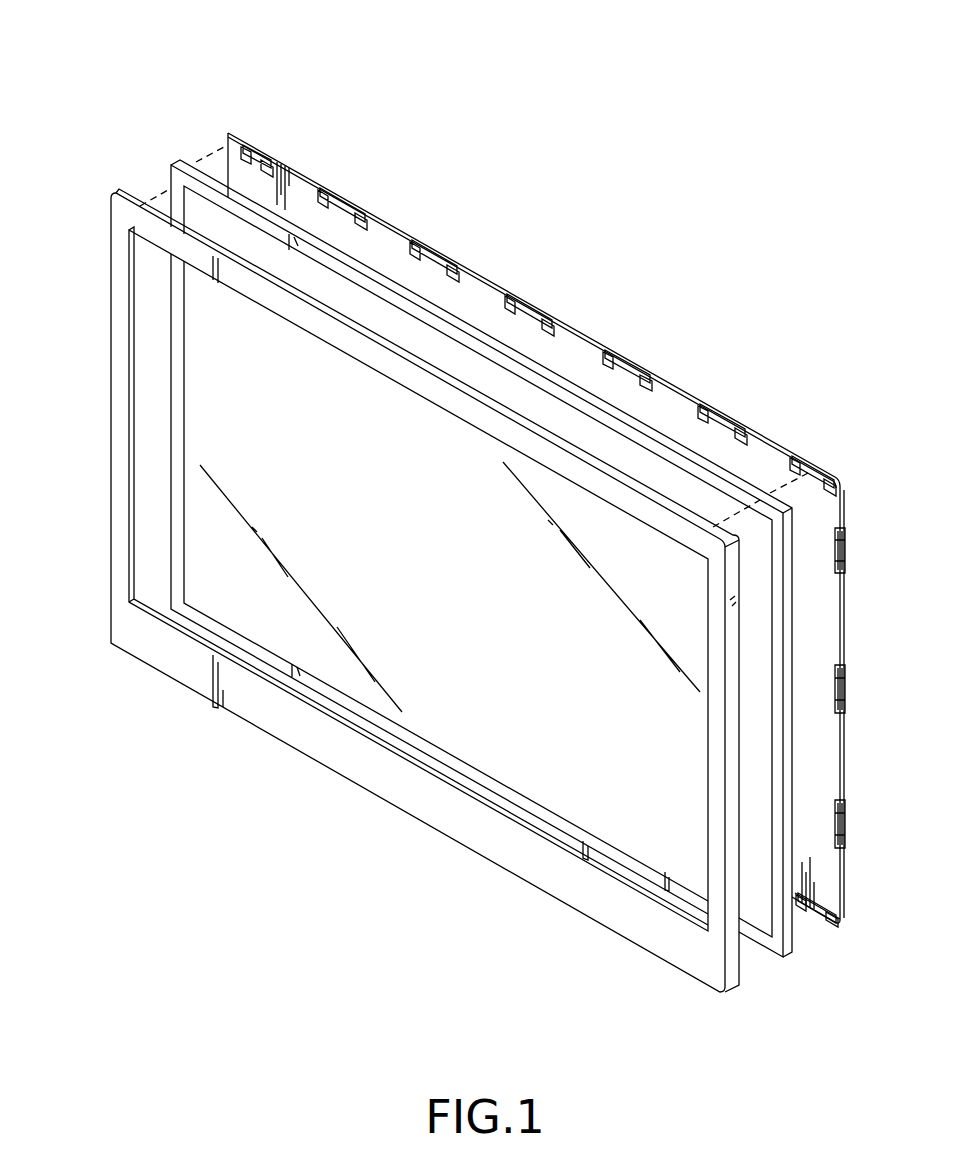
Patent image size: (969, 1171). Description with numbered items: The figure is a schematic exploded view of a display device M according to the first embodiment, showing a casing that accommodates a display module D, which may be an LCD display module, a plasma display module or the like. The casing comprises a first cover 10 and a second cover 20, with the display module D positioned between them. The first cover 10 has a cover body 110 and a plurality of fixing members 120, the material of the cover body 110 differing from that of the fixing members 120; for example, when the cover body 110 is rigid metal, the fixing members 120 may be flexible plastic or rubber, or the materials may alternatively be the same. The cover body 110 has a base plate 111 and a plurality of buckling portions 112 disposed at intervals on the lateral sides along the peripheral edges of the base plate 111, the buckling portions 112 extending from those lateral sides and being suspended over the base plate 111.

The display device M is at (214, 23).
The second cover 20 is at (113, 186).
The display module D is at (166, 174).
The first cover 10 is at (215, 147).
The cover body 110 is at (592, 337).
The fixing members 120 is at (733, 411).
The base plate 111 is at (828, 497).
The buckling portions 112 is at (842, 909).